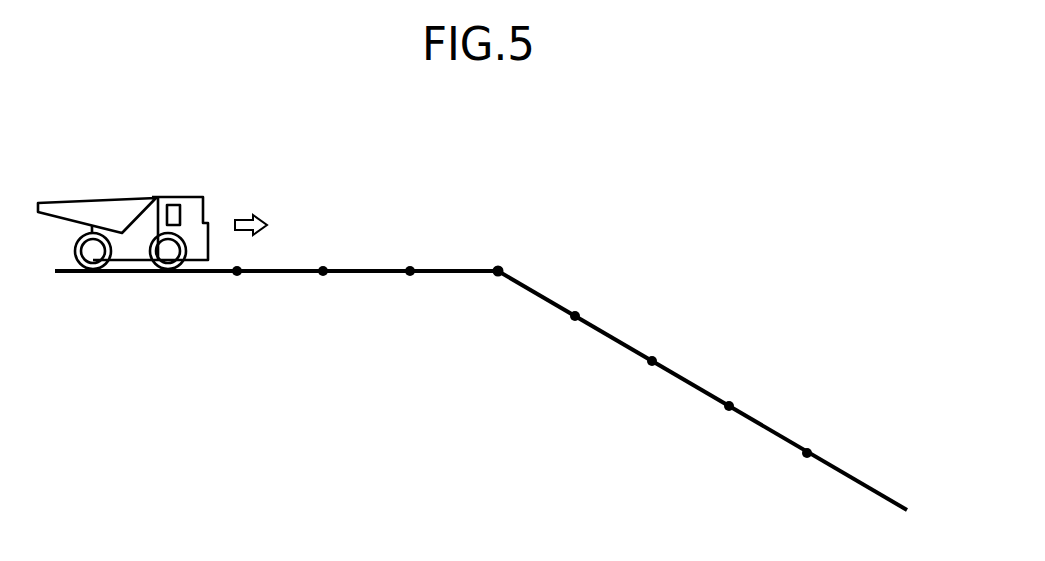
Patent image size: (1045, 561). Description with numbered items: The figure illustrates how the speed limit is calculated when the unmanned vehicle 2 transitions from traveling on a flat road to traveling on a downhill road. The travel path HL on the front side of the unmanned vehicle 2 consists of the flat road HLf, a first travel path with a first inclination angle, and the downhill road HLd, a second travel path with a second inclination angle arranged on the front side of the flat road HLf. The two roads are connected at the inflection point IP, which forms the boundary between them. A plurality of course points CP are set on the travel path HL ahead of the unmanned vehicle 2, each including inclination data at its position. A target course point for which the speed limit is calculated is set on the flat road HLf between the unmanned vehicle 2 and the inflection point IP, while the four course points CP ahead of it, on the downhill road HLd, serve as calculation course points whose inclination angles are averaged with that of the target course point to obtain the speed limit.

The unmanned vehicle 2 is at (112, 200).
The travel path HL is at (583, 147).
The flat road HLf is at (470, 210).
The downhill road HLd is at (559, 243).
The course point CP is at (239, 268).
The inflection point IP is at (511, 255).